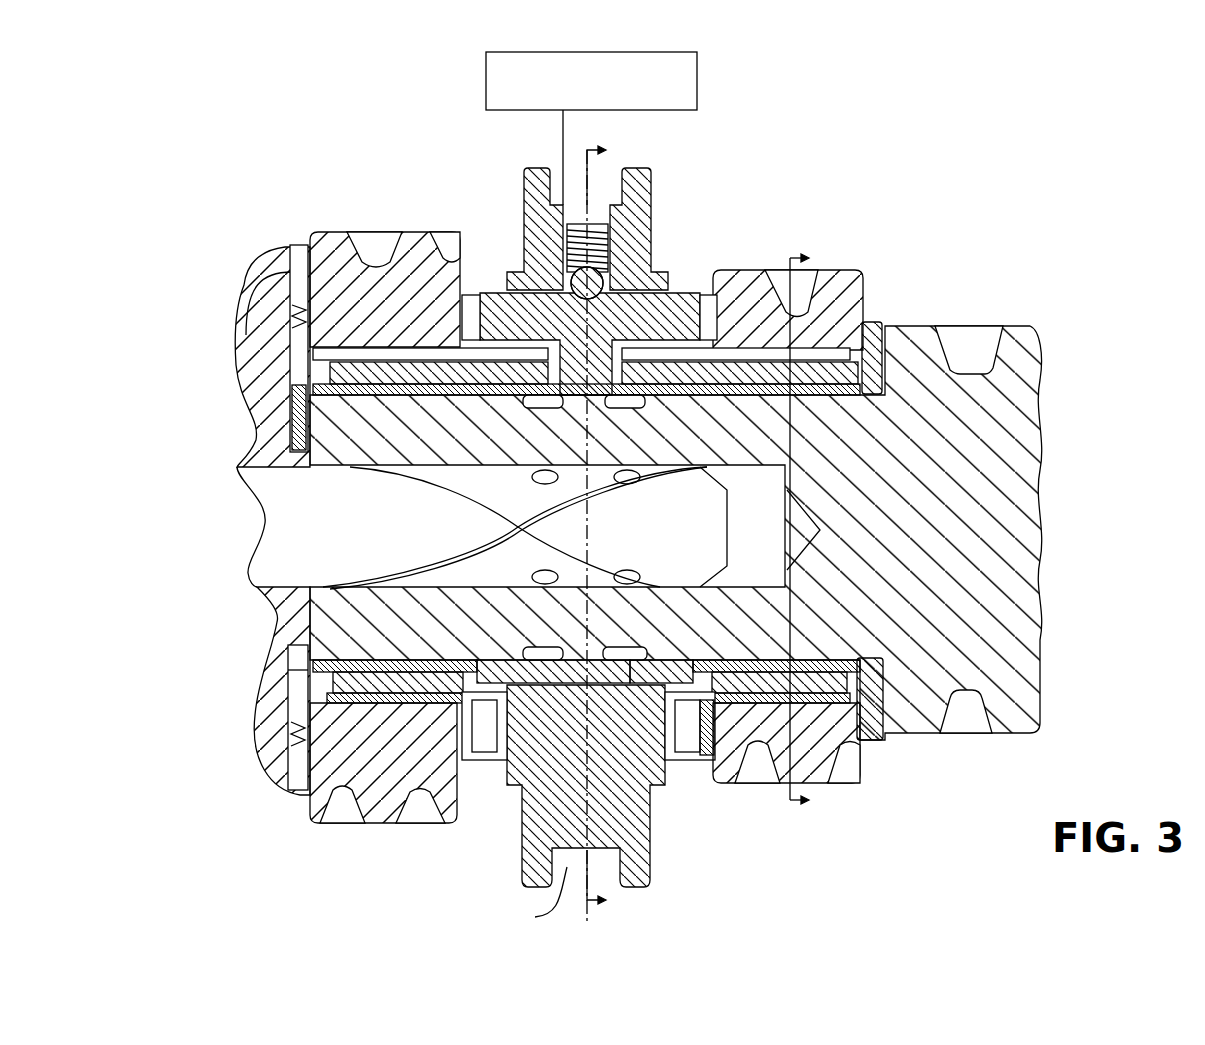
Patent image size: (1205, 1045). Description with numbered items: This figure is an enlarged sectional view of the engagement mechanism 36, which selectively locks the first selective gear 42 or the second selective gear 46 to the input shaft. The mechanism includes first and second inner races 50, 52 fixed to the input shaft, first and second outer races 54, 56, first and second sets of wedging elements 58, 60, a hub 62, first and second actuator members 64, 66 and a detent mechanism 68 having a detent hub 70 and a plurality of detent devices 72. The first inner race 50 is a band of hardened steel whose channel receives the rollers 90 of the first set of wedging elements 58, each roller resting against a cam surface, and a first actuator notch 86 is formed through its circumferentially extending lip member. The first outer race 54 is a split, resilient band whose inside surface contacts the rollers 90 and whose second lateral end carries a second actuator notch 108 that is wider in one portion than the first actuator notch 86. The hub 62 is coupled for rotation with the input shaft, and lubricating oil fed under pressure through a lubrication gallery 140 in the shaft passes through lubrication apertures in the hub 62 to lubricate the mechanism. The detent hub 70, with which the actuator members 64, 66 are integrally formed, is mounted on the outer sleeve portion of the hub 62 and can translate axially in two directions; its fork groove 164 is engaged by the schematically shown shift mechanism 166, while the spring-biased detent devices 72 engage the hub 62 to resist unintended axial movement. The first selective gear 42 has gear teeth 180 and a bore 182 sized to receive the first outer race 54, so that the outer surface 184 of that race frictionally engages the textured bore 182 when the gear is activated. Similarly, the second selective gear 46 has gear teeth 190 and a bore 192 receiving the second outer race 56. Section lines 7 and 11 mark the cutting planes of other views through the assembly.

The engagement mechanism 36 is at (660, 239).
The first selective gear 42 is at (850, 732).
The second selective gear 46 is at (330, 775).
The first inner race 50 is at (822, 396).
The second inner race 52 is at (373, 660).
The first outer race 54 is at (822, 745).
The second outer race 56 is at (422, 708).
The first set of wedging elements 58 is at (833, 374).
The second set of wedging elements 60 is at (357, 375).
The hub 62 is at (673, 305).
The first actuator member 64 is at (650, 670).
The second actuator member 66 is at (500, 670).
The detent mechanism 68 is at (658, 192).
The detent hub 70 is at (633, 813).
The detent device 72 is at (577, 232).
The first actuator notch 86 is at (493, 690).
The rollers 90 is at (274, 638).
The second actuator notch 108 is at (676, 705).
The lubrication gallery 140 is at (337, 528).
The fork groove 164 is at (532, 898).
The shift mechanism 166 is at (683, 68).
The gear teeth 180 is at (846, 294).
The bore 182 is at (817, 345).
The outer surface 184 is at (787, 668).
The gear teeth 190 is at (406, 240).
The bore 192 is at (384, 348).
The section line 7- 7 is at (798, 530).
The section line 11- 11 is at (596, 523).